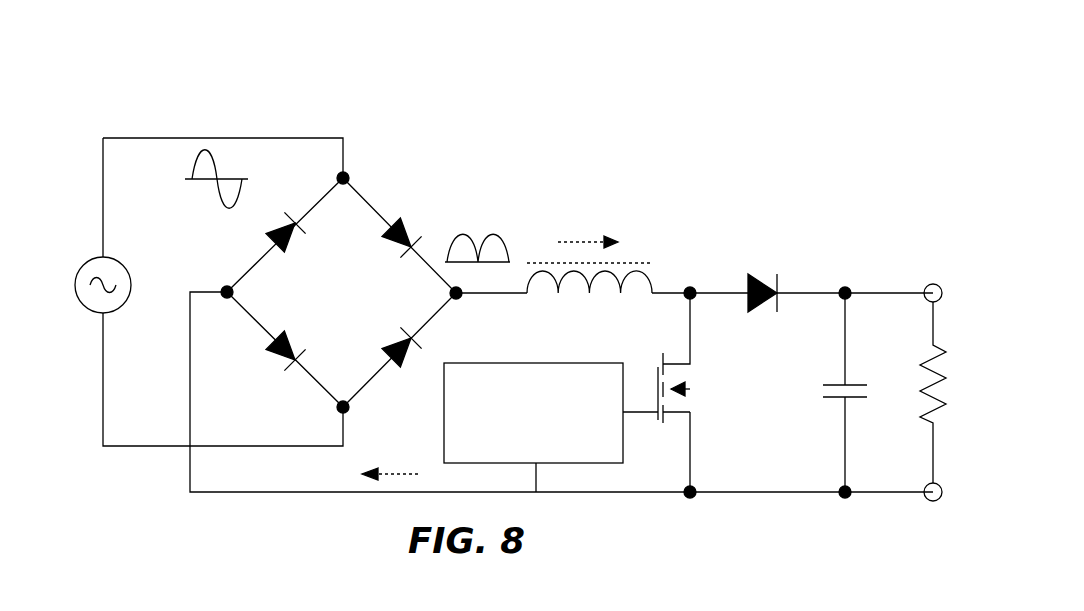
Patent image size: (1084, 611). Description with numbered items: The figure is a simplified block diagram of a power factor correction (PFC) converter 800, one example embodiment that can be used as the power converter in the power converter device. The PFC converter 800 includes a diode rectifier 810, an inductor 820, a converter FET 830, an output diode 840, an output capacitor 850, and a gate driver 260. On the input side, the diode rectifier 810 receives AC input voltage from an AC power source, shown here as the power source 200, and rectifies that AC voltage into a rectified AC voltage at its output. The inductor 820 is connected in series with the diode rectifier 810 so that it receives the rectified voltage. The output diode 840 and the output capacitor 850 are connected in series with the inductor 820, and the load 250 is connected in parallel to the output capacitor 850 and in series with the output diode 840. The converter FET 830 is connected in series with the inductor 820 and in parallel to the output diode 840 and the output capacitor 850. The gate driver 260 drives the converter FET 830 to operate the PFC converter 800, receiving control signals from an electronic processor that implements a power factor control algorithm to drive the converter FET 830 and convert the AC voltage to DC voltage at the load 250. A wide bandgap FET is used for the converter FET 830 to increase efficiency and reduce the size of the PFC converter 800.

The PFC converter 800 is at (118, 98).
The diode rectifier 810 is at (398, 171).
The inductor 820 is at (643, 268).
The converter FET 830 is at (694, 403).
The output diode 840 is at (748, 281).
The output capacitor 850 is at (832, 397).
The power source 200 is at (85, 262).
The load 250 is at (918, 367).
The gate driver 260 is at (444, 412).